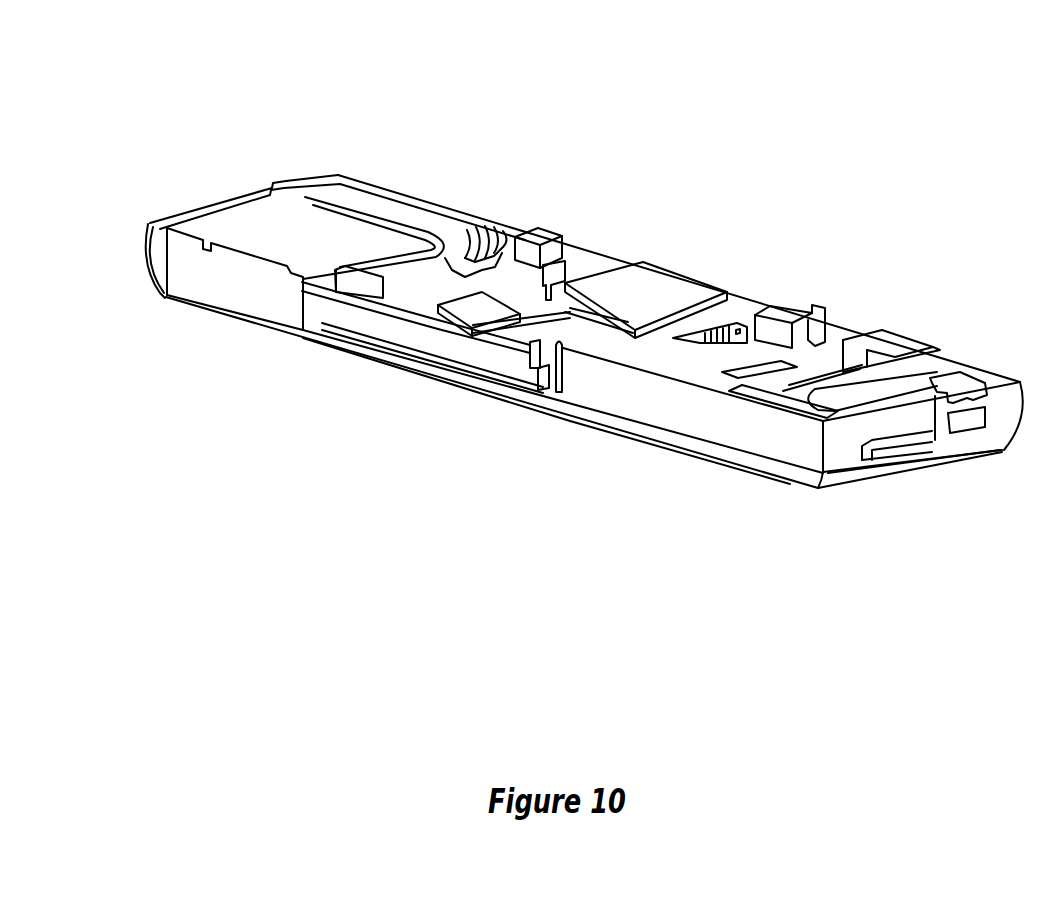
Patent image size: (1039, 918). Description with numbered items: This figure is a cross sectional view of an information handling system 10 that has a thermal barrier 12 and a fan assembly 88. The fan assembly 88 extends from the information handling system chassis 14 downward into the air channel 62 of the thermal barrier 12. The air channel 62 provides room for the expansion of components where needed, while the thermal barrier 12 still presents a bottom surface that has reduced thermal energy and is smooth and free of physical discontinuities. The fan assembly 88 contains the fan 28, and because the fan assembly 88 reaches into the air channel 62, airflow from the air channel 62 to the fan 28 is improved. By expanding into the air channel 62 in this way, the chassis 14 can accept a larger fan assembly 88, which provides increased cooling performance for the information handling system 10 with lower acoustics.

The information handling system 10 is at (628, 66).
The thermal barrier 12 is at (792, 490).
The information handling system chassis 14 is at (846, 316).
The fan 28 is at (297, 222).
The air channel 62 is at (567, 415).
The fan assembly 88 is at (183, 260).